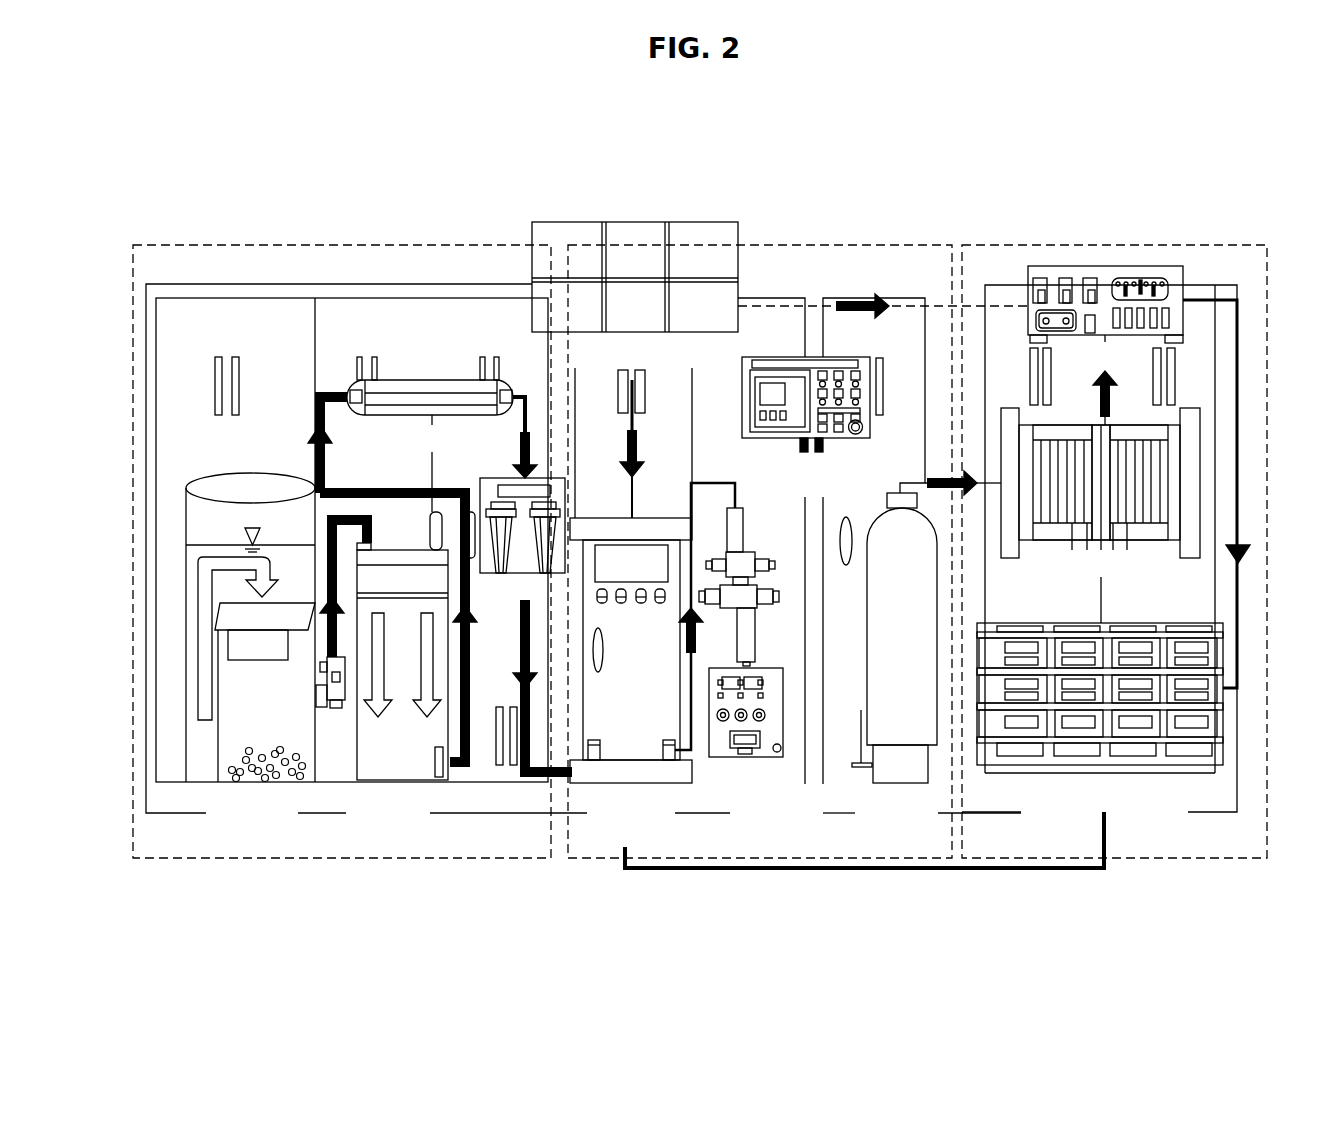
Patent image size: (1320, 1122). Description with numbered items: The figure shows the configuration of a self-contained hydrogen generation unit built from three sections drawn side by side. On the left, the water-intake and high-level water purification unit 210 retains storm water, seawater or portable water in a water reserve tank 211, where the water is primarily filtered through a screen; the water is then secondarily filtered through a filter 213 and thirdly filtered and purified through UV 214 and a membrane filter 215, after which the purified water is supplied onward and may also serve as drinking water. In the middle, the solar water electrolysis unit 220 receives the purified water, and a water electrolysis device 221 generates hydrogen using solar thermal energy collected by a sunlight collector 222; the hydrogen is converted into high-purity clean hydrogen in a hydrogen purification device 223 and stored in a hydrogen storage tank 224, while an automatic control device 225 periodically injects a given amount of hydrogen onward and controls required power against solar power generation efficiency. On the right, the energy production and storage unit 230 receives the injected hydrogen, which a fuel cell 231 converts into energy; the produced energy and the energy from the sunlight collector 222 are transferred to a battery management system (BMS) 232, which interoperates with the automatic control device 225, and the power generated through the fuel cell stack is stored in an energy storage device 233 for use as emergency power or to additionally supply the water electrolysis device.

The water-intake and high-level water purification unit 210 is at (360, 503).
The water reserve tank 211 is at (252, 880).
The filter 213 is at (388, 882).
The UV 214 is at (374, 456).
The membrane filter 215 is at (496, 634).
The solar water electrolysis unit 220 is at (836, 508).
The water electrolysis device 221 is at (645, 890).
The sunlight collector 222 is at (668, 395).
The hydrogen purification device 223 is at (776, 890).
The hydrogen storage tank 224 is at (902, 890).
The automatic control device 225 is at (890, 466).
The energy production and storage unit 230 is at (1116, 503).
The fuel cell 231 is at (1156, 593).
The battery management system (BMS) 232 is at (1134, 400).
The energy storage device 233 is at (1172, 880).